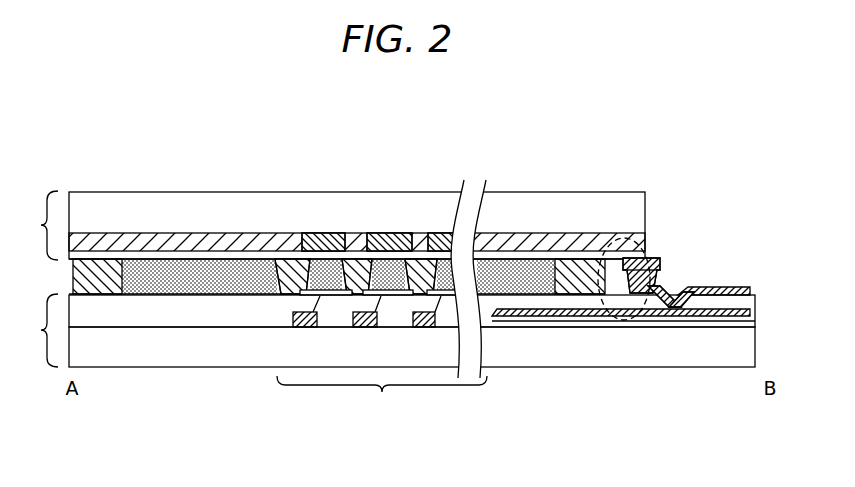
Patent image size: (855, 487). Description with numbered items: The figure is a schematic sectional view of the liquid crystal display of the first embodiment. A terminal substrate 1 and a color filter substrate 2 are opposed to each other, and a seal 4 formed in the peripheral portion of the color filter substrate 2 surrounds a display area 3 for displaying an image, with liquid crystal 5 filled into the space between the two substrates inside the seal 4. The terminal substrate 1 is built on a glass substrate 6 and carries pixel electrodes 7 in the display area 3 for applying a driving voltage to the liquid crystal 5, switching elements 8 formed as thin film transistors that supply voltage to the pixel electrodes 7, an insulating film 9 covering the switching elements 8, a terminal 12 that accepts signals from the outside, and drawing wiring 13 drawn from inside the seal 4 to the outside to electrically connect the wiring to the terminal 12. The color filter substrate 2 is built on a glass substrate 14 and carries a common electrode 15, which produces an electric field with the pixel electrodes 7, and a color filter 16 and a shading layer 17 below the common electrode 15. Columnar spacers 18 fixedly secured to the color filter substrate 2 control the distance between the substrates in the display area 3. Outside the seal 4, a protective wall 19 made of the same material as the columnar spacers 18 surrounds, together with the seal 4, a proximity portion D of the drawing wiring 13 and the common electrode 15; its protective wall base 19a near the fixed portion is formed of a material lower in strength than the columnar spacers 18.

The terminal substrate 1 is at (27, 340).
The color filter substrate 2 is at (27, 236).
The display area 3 is at (382, 396).
The seal 4 is at (88, 280).
The liquid crystal 5 is at (170, 292).
The glass substrate 6 is at (245, 343).
The pixel electrodes 7 is at (398, 295).
The switching elements 8 is at (315, 326).
The insulating film 9 is at (203, 313).
The terminal 12 is at (717, 285).
The drawing wiring 13 is at (545, 316).
The glass substrate 14 is at (117, 213).
The common electrode 15 is at (215, 266).
The color filter 16 is at (318, 252).
The shading layer 17 is at (152, 245).
The columnar spacers 18 is at (282, 258).
The protective wall 19 is at (672, 282).
The protective wall base 19a is at (640, 258).
The proximity portion D is at (640, 297).